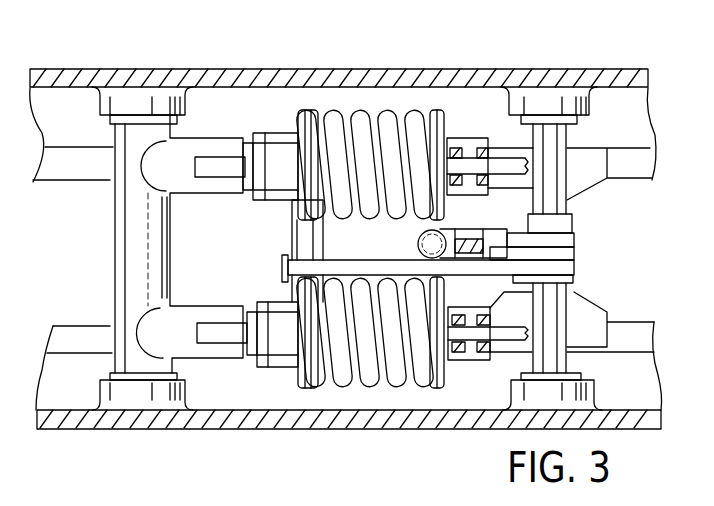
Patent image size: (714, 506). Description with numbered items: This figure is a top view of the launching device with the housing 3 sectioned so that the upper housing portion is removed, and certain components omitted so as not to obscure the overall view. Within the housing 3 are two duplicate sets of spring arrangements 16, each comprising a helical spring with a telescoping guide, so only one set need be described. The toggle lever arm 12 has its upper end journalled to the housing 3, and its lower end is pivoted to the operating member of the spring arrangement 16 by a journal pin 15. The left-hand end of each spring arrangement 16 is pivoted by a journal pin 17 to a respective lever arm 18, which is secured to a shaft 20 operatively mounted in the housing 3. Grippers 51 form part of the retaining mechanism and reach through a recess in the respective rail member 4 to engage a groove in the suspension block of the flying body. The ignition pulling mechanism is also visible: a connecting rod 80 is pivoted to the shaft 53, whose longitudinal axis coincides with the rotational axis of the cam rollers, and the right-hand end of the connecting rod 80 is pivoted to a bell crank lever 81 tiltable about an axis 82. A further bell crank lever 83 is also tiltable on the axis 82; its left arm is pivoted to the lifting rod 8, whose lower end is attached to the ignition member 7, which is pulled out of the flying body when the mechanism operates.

The housing 3 is at (283, 80).
The rail member 4 is at (95, 170).
The ignition member 7 is at (418, 242).
The lifting rod 8 is at (467, 240).
The toggle lever arm 12 is at (512, 162).
The journal pin 15 is at (470, 148).
The spring arrangement 16 is at (360, 155).
The journal pin 17 is at (220, 165).
The lever arm 18 is at (189, 152).
The shaft 20 is at (140, 133).
The gripper 51 is at (605, 158).
The shaft 53 is at (305, 236).
The connecting rod 80 is at (357, 272).
The bell crank lever 81 is at (571, 252).
The axis 82 is at (548, 135).
The bell crank lever 83 is at (565, 236).